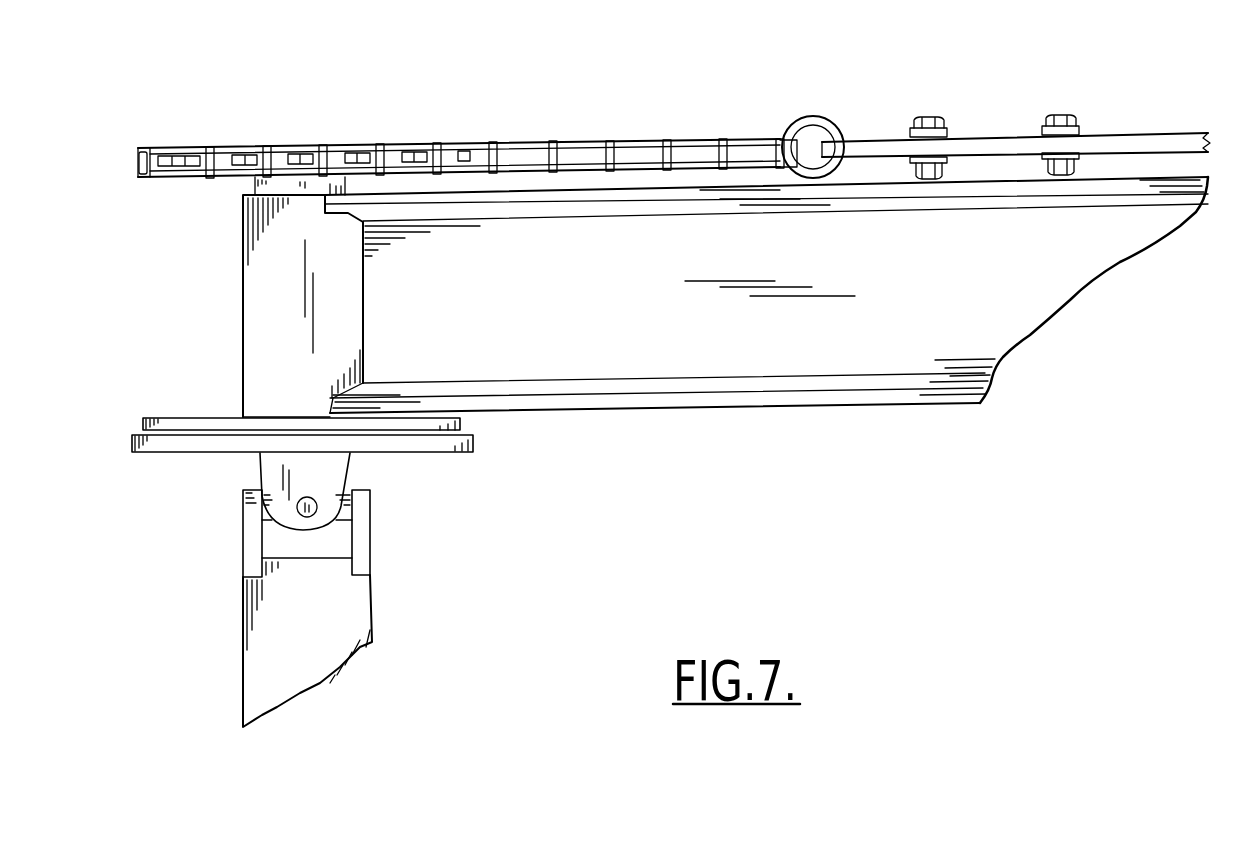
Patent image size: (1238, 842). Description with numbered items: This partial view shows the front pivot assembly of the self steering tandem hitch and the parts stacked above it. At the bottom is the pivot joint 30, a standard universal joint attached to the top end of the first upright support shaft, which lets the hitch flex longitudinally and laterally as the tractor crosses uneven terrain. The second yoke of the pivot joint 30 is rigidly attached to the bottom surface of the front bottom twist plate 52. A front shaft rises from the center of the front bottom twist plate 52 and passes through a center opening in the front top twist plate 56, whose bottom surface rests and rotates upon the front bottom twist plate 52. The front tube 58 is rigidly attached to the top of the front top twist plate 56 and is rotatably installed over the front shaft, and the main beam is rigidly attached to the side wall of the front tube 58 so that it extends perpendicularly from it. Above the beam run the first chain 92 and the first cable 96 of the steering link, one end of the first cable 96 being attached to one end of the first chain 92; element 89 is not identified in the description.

The pivot joint 30 is at (390, 457).
The front bottom twist plate 52 is at (163, 457).
The front top twist plate 56 is at (163, 418).
The front tube 58 is at (243, 222).
The rail track 89 is at (298, 145).
The first chain 92 is at (543, 140).
The first cable 96 is at (995, 136).